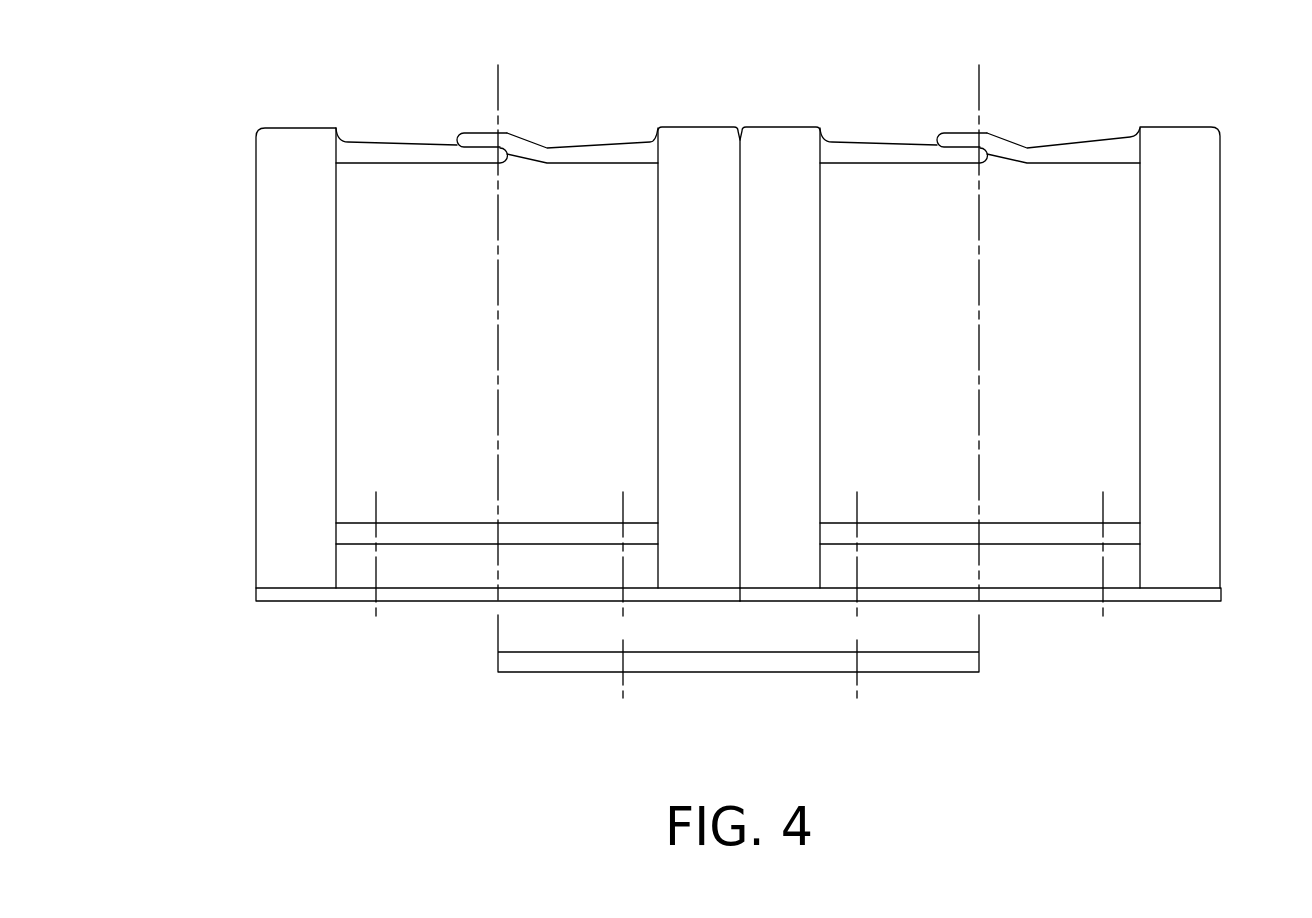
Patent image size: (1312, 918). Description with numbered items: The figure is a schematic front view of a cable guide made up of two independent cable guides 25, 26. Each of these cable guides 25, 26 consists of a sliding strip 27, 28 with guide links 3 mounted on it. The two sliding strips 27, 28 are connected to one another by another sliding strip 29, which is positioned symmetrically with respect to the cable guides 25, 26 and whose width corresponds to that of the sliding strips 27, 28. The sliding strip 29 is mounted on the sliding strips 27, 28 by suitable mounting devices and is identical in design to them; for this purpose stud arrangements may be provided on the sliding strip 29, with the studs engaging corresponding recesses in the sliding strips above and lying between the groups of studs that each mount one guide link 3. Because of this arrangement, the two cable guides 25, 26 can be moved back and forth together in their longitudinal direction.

The guide link 3 is at (236, 172).
The cable guide 25 is at (392, 104).
The cable guide 26 is at (894, 104).
The sliding strip 27 is at (406, 589).
The sliding strip 28 is at (1049, 589).
The sliding strip 29 is at (672, 660).